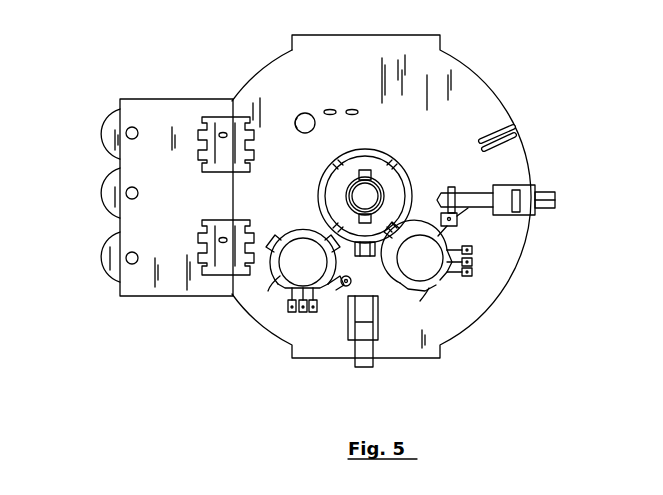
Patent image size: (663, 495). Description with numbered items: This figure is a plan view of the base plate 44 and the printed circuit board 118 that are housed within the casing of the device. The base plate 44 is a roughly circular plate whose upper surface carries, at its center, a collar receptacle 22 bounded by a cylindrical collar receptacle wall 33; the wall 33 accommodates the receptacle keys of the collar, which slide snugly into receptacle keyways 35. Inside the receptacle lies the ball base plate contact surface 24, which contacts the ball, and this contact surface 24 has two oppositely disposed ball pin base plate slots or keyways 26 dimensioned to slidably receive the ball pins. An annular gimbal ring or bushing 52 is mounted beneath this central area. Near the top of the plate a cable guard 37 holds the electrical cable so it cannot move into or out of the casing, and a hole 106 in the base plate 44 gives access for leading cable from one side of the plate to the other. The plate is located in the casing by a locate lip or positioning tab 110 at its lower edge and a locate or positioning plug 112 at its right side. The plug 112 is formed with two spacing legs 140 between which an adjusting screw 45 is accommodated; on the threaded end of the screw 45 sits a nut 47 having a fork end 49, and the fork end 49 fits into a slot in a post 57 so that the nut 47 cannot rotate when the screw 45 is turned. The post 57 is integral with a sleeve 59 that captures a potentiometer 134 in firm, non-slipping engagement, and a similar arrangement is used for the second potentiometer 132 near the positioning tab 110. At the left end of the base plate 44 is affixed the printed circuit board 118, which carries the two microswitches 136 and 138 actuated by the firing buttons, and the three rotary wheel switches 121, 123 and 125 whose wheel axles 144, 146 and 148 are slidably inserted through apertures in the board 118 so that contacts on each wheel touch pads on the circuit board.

The collar receptacle 22 is at (369, 162).
The ball base plate contact surface 24 is at (381, 185).
The ball pin base plate slots or keyways 26 is at (372, 176).
The cylindrical collar receptacle wall 33 is at (358, 152).
The receptacle keyways 35 is at (376, 252).
The cable guard 37 is at (350, 108).
The base plate 44 is at (499, 100).
The adjusting screw 45 is at (477, 192).
The nut 47 is at (451, 190).
The fork end 49 is at (458, 226).
The annular gimbal ring or bushing 52 is at (380, 193).
The post 57 is at (345, 287).
The sleeve 59 is at (342, 299).
The hole 106 is at (297, 116).
The locate lip or positioning tab 110 is at (362, 368).
The locate or positioning plug 112 is at (554, 192).
The printed circuit board 118 is at (184, 297).
The rotary wheel switch 121 is at (103, 130).
The rotary wheel switch 123 is at (103, 192).
The rotary wheel switch 125 is at (103, 256).
The potentiometer 132 is at (305, 247).
The potentiometer 134 is at (436, 283).
The microswitch 136 is at (226, 137).
The microswitch 138 is at (224, 238).
The spacing legs 140 is at (462, 216).
The wheel axle 144 is at (138, 132).
The wheel axle 146 is at (137, 189).
The wheel axle 148 is at (137, 254).